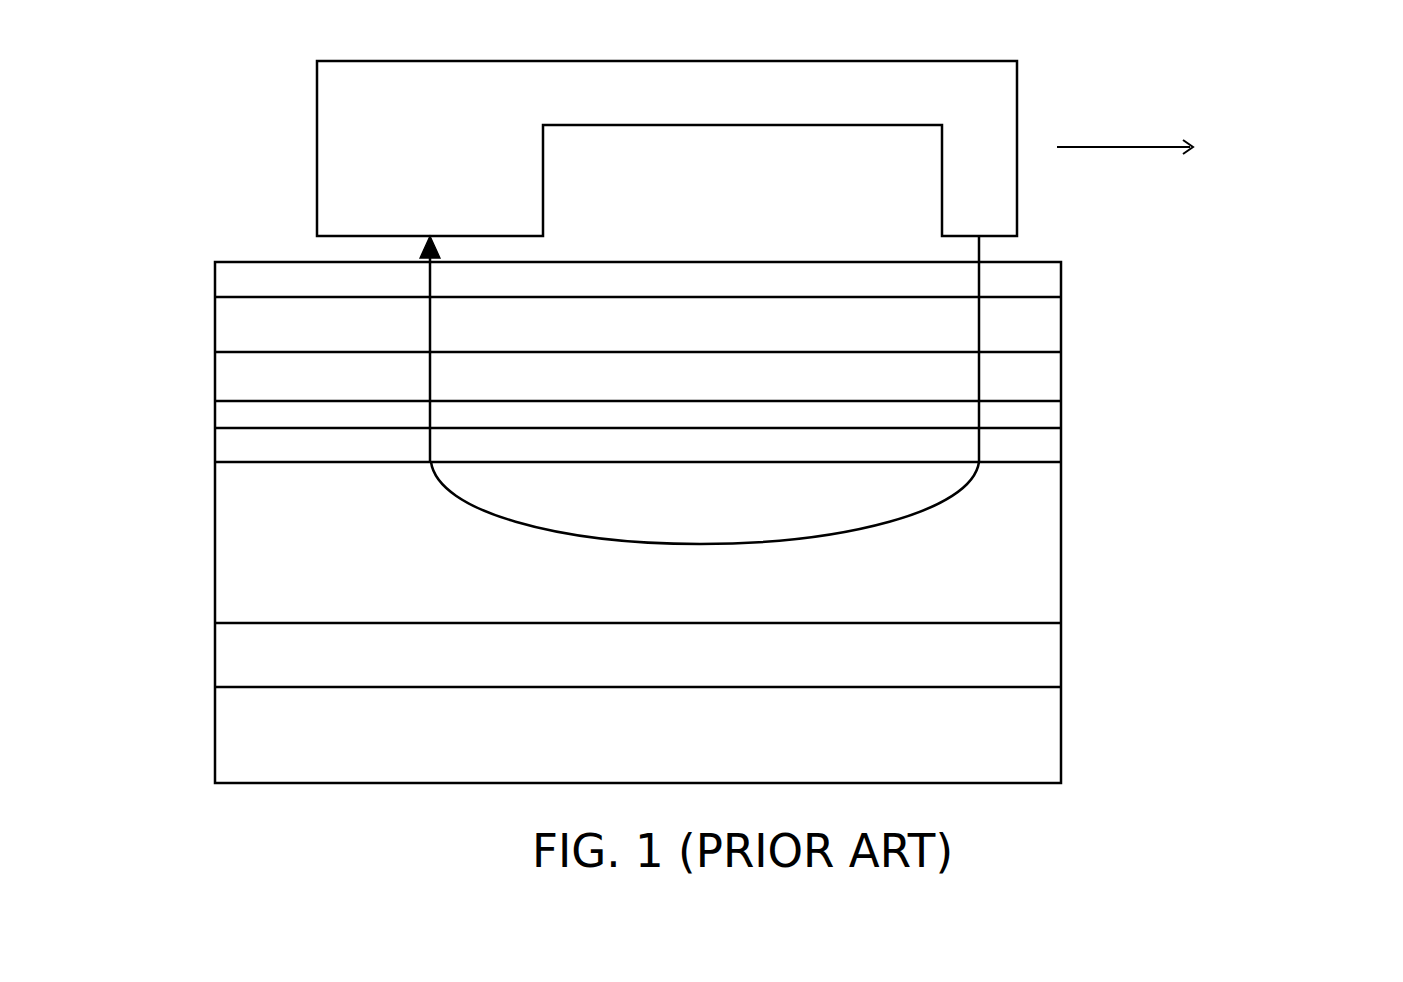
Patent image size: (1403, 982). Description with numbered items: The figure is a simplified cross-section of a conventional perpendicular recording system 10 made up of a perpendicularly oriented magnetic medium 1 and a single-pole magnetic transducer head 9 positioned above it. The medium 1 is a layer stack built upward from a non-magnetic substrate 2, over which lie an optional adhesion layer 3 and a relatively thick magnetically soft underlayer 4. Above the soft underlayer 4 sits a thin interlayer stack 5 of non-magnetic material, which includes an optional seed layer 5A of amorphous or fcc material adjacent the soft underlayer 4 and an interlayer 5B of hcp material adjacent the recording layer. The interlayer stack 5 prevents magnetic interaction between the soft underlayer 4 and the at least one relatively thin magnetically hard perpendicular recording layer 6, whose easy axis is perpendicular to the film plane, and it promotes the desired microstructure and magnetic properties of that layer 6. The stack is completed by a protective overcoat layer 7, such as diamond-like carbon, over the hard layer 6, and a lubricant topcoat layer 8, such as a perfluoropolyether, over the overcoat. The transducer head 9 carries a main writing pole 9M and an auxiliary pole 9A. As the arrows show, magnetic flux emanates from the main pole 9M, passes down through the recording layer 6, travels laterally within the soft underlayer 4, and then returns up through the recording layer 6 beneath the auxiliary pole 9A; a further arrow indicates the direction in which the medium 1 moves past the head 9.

The perpendicularly oriented magnetic medium 1 is at (202, 262).
The non-magnetic substrate 2 is at (1075, 735).
The adhesion layer 3 is at (1075, 653).
The magnetically soft underlayer 4 is at (1075, 541).
The interlayer stack 5 is at (1192, 400).
The seed layer 5A is at (1075, 414).
The interlayer 5B is at (1075, 447).
The magnetically hard perpendicular recording layer 6 is at (1075, 377).
The protective overcoat layer 7 is at (1075, 324).
The lubricant topcoat layer 8 is at (1075, 280).
The magnetic transducer head 9 is at (302, 61).
The auxiliary pole 9A is at (557, 174).
The main pole 9M is at (928, 174).
The perpendicular recording system 10 is at (1280, 61).